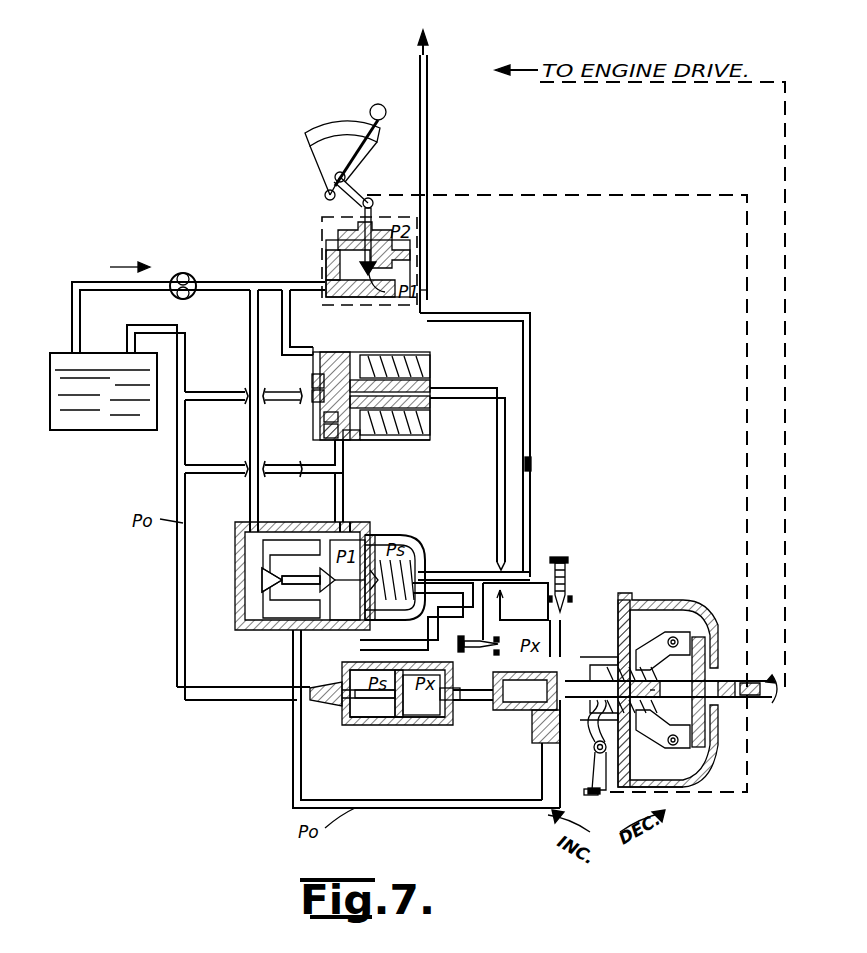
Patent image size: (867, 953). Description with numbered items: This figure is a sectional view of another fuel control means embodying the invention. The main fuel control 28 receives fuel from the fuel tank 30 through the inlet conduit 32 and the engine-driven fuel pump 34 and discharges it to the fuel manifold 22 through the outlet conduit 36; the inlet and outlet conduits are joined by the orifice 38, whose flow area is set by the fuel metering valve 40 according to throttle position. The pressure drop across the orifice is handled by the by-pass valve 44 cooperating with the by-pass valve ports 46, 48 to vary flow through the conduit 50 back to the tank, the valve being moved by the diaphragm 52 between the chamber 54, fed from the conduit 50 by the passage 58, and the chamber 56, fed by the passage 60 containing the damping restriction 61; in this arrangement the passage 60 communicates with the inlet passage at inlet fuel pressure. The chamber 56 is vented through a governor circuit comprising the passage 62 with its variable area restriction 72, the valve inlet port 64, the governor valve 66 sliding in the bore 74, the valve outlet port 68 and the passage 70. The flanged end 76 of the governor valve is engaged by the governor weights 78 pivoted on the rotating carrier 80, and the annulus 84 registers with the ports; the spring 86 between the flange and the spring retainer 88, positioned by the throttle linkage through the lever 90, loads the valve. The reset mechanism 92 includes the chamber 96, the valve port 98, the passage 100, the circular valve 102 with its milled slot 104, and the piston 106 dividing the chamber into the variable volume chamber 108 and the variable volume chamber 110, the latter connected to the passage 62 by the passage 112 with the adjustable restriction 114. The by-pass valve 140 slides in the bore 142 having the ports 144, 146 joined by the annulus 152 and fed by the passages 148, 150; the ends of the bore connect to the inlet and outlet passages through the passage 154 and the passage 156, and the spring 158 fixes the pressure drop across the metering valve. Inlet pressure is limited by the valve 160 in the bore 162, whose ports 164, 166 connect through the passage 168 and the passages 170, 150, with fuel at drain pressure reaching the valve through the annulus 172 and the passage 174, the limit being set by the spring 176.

The fuel manifold 22 is at (442, 29).
The main fuel control 28 is at (312, 258).
The fuel tank 30 is at (120, 428).
The inlet conduit 32 is at (72, 298).
The fuel pump 34 is at (194, 275).
The outlet conduit 36 is at (428, 140).
The orifice 38 is at (385, 285).
The fuel metering valve 40 is at (326, 244).
The by-pass valve 44 is at (242, 596).
The by-pass valve port 46 is at (248, 576).
The by-pass valve port 48 is at (295, 620).
The conduit 50 is at (250, 360).
The diaphragm 52 is at (403, 540).
The chamber 54 is at (355, 614).
The chamber 56 is at (420, 605).
The passage 58 is at (350, 512).
The passage 60 is at (480, 572).
The damping restriction 61 is at (534, 463).
The passage 62 is at (560, 625).
The valve inlet port 64 is at (568, 655).
The governor valve 66 is at (650, 690).
The valve outlet port 68 is at (535, 733).
The passage 70 is at (465, 804).
The variable area restriction 72 is at (578, 600).
The bore 74 is at (516, 680).
The flanged end 76 is at (690, 632).
The governor weights 78 is at (670, 776).
The carrier 80 is at (722, 730).
The annulus 84 is at (590, 745).
The spring 86 is at (645, 660).
The spring retainer 88 is at (632, 650).
The lever 90 is at (592, 792).
The reset mechanism 92 is at (375, 730).
The chamber 96 is at (415, 720).
The valve port 98 is at (372, 668).
The passage 100 is at (293, 712).
The circular valve 102 is at (352, 725).
The milled slot 104 is at (315, 690).
The piston 106 is at (412, 670).
The variable volume chamber 108 is at (392, 725).
The variable volume chamber 110 is at (437, 718).
The passage 112 is at (473, 711).
The adjustable restriction 114 is at (483, 636).
The by-pass valve 140 is at (350, 352).
The bore 142 is at (430, 320).
The port 144 is at (320, 380).
The port 146 is at (430, 387).
The passage 148 is at (222, 405).
The passage 150 is at (500, 490).
The annulus 152 is at (335, 352).
The passage 154 is at (282, 300).
The passage 156 is at (428, 298).
The spring 158 is at (420, 366).
The valve 160 is at (318, 440).
The bore 162 is at (400, 437).
The port 164 is at (335, 442).
The port 166 is at (320, 398).
The passage 168 is at (330, 478).
The passage 170 is at (430, 404).
The annulus 172 is at (355, 442).
The passage 174 is at (318, 420).
The spring 176 is at (430, 433).